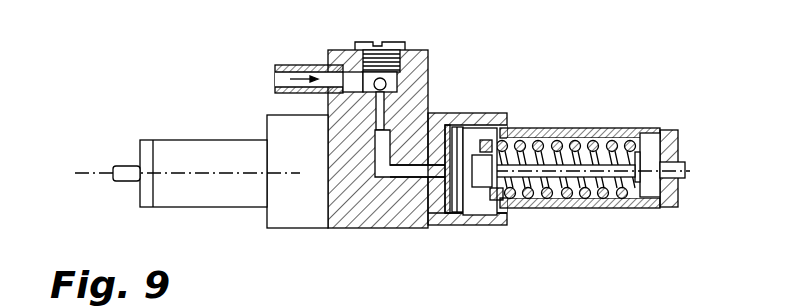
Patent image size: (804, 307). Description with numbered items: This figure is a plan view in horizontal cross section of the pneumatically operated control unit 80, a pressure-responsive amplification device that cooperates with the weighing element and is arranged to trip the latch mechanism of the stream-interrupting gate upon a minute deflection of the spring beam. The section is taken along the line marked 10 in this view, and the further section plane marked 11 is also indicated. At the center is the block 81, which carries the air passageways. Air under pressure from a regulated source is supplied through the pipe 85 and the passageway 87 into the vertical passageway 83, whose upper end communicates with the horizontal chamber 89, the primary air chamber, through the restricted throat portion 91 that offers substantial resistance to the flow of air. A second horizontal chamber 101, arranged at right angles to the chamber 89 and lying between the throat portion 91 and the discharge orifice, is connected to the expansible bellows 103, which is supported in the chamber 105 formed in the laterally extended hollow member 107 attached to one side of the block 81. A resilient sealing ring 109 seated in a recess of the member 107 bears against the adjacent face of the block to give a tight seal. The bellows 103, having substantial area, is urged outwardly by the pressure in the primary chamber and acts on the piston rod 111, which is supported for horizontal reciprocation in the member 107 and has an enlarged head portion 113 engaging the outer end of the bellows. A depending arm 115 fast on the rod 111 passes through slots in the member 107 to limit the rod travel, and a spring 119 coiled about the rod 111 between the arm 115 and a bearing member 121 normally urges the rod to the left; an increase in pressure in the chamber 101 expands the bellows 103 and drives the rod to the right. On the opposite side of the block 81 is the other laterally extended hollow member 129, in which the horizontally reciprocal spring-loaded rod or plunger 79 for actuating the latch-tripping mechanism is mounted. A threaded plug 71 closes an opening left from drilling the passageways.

The section line 10— 10 is at (113, 173).
The section line 11 is at (400, 298).
The threaded plug 71 is at (368, 42).
The spring-loaded rod or plunger 79 is at (125, 166).
The pneumatically operated control unit 80 is at (549, 70).
The block 81 is at (428, 50).
The vertical passageway 83 is at (381, 78).
The pipe 85 is at (300, 65).
The passageway 87 is at (348, 72).
The horizontal chamber (primary air chamber) 89 is at (378, 153).
The restricted throat portion 91 is at (377, 128).
The second horizontal chamber 101 is at (402, 172).
The expansible bellows 103 is at (450, 113).
The chamber 105 is at (490, 125).
The laterally extended hollow member 107 is at (590, 130).
The resilient sealing ring 109 is at (434, 224).
The piston rod 111 is at (562, 173).
The enlarged head portion 113 is at (475, 113).
The depending arm 115 is at (476, 225).
The spring 119 is at (623, 133).
The bearing member 121 is at (650, 143).
The laterally extended hollow member 129 is at (208, 140).